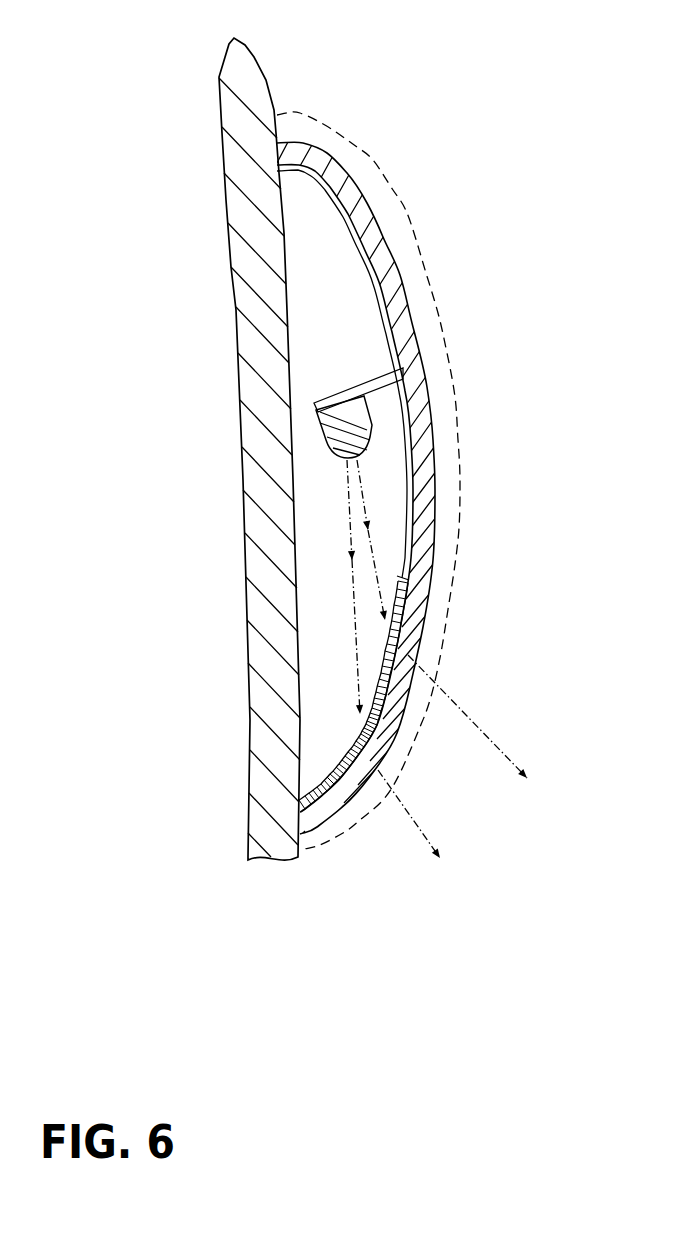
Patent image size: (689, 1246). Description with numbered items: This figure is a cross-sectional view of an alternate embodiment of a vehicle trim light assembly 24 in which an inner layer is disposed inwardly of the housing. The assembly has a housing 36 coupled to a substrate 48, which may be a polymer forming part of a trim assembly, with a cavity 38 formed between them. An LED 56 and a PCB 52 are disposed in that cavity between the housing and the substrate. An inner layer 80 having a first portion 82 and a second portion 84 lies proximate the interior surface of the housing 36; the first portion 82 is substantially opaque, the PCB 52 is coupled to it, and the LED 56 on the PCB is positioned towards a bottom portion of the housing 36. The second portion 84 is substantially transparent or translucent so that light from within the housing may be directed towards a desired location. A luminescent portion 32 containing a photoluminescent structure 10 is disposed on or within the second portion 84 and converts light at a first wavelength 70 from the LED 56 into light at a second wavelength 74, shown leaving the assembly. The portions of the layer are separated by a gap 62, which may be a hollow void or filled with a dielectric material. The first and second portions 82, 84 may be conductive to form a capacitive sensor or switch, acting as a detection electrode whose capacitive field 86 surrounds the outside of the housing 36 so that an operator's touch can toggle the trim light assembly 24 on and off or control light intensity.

The photoluminescent structure 10 is at (415, 491).
The trim light assembly 24 is at (368, 479).
The luminescent portion 32 is at (393, 630).
The housing 36 is at (379, 492).
The cavity 38 is at (410, 266).
The substrate 48 is at (253, 198).
The printed circuit board 52 is at (362, 393).
The LED 56 is at (372, 425).
The gap 62 is at (413, 577).
The first wavelength 70 is at (373, 550).
The second wavelength 74 is at (452, 698).
The inner layer 80 is at (393, 297).
The first portion of the inner layer 82 is at (408, 490).
The second portion of the inner layer 84 is at (424, 693).
The capacitive field 86 is at (357, 147).